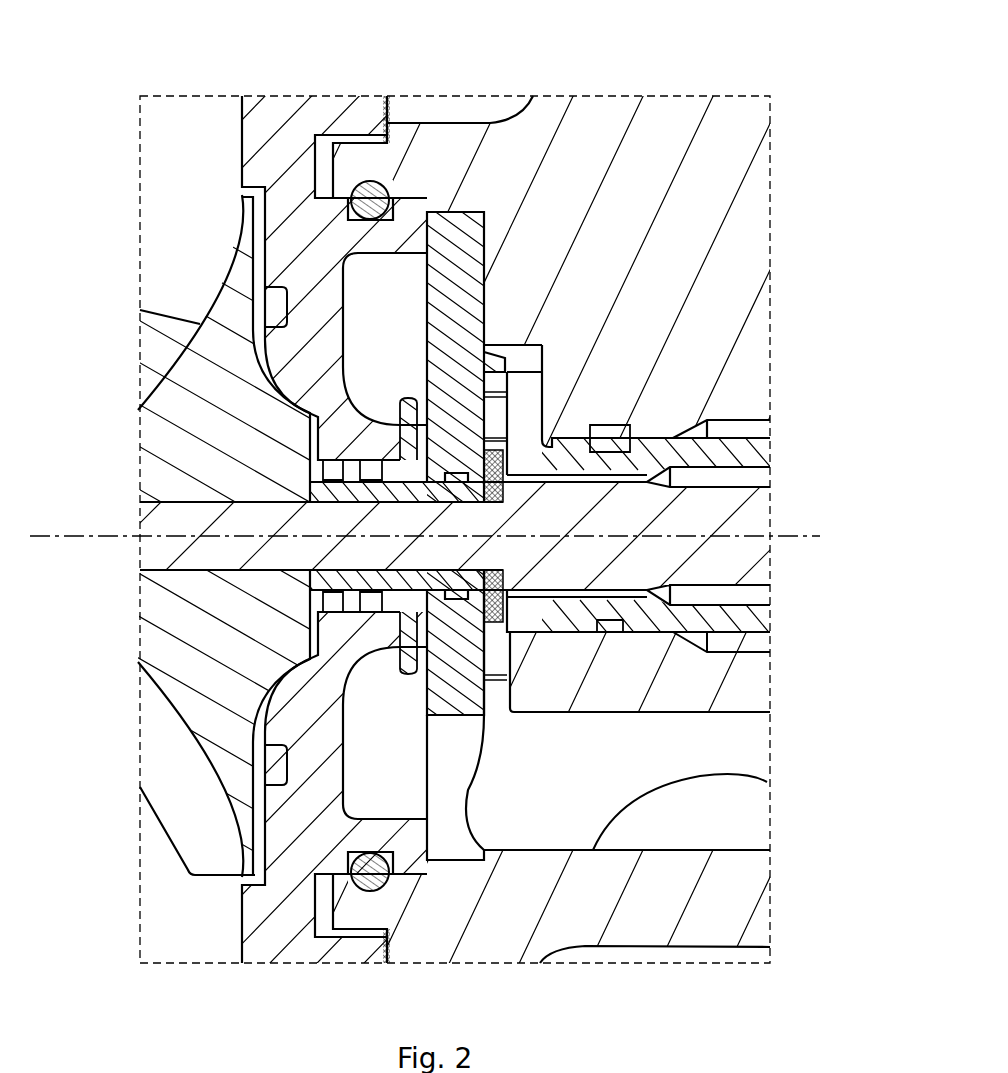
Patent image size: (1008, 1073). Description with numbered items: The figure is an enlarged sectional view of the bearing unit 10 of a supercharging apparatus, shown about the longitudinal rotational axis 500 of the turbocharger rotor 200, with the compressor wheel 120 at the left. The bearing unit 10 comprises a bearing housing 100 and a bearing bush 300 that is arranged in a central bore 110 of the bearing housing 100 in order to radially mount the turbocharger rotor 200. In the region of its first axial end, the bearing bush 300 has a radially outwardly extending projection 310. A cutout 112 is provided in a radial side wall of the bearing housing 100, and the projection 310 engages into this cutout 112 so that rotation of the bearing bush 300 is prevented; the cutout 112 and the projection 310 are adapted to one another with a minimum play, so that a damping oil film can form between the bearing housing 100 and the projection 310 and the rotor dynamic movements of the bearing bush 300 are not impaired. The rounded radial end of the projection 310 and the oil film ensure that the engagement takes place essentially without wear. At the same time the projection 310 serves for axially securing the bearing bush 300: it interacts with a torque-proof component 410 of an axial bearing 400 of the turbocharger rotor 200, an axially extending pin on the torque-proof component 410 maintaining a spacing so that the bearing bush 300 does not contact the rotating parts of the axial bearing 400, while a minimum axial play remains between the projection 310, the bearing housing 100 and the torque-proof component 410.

The bearing unit 10 is at (790, 165).
The bearing housing 100 is at (755, 227).
The central bore 110 is at (648, 632).
The cutout 112 is at (507, 330).
The compressor wheel 120 is at (250, 160).
The turbocharger rotor 200 is at (575, 573).
The bearing bush 300 is at (763, 452).
The projection 310 is at (545, 400).
The axial bearing 400 is at (365, 330).
The torque-proof component 410 is at (420, 316).
The rotational axis 500 is at (92, 536).